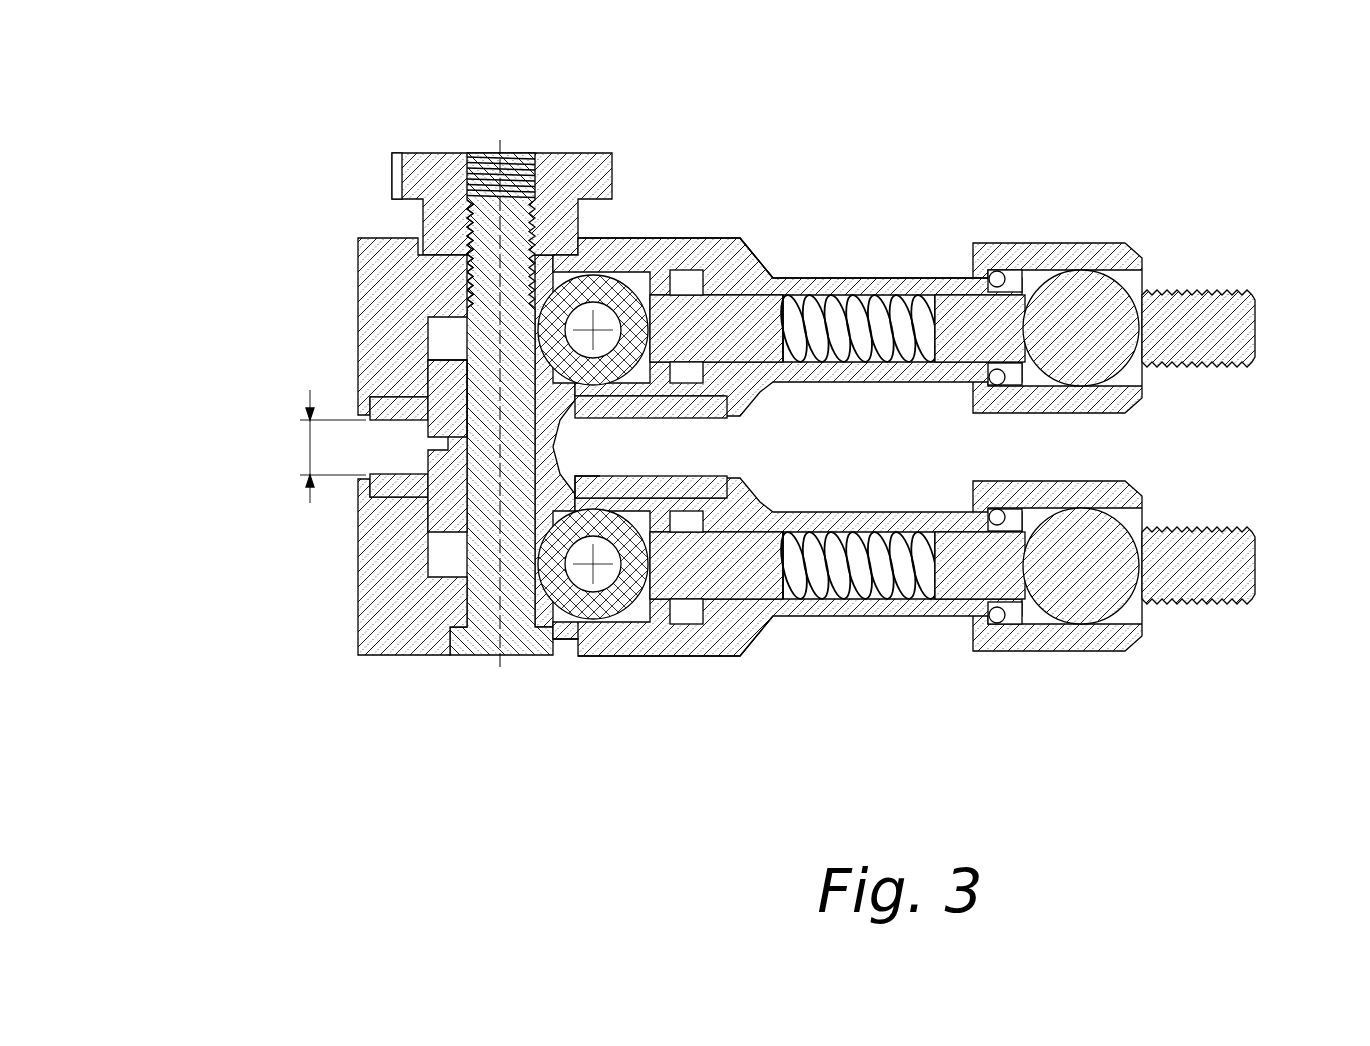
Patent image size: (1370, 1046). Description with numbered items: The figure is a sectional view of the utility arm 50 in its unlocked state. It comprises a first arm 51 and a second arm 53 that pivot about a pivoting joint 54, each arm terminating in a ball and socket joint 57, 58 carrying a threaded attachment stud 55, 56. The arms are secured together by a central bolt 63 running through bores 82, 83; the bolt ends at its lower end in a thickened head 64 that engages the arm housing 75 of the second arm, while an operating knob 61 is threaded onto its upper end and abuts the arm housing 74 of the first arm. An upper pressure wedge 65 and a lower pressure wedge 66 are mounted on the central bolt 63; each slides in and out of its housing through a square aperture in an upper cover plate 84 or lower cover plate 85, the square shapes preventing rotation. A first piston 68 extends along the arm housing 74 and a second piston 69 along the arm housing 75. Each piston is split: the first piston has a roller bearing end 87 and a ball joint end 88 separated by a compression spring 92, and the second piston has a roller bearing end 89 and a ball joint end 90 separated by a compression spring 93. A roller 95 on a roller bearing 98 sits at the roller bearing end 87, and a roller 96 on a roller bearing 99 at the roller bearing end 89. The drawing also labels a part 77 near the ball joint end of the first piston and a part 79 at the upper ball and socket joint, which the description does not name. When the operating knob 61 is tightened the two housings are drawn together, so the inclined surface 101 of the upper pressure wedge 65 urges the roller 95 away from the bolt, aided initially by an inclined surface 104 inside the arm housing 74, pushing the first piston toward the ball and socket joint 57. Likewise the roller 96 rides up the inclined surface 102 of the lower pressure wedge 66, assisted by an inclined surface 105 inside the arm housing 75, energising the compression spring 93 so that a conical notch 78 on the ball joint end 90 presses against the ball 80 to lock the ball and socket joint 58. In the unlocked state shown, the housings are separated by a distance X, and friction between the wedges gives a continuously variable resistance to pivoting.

The utility arm 50 is at (751, 450).
The first arm 51 is at (810, 277).
The second arm 53 is at (787, 643).
The pivoting joint 54 is at (457, 450).
The threaded attachment stud 55 is at (1208, 343).
The threaded attachment stud 56 is at (1227, 572).
The ball and socket joint 57 is at (1063, 260).
The ball and socket joint 58 is at (1063, 640).
The operating knob 61 is at (430, 165).
The central bolt 63 is at (314, 254).
The thickened head 64 is at (409, 427).
The upper pressure wedge 65 is at (435, 382).
The lower pressure wedge 66 is at (447, 488).
The first piston 68 is at (753, 307).
The second piston 69 is at (702, 623).
The arm housing 74 is at (787, 253).
The arm housing 75 is at (645, 645).
The upper piston rod 77 is at (1022, 320).
The conical notch 78 is at (1000, 612).
The upper ball joint 79 is at (1117, 308).
The ball 80 is at (1105, 570).
The bore 82 is at (465, 303).
The bore 83 is at (329, 527).
The upper cover plate 84 is at (390, 405).
The lower cover plate 85 is at (744, 466).
The roller bearing end 87 is at (688, 317).
The ball joint end 88 is at (980, 335).
The roller bearing end 89 is at (687, 578).
The ball joint end 90 is at (988, 548).
The compression spring 92 is at (898, 317).
The compression spring 93 is at (823, 570).
The roller 95 is at (587, 283).
The roller 96 is at (631, 696).
The roller bearing 98 is at (608, 220).
The roller bearing 99 is at (610, 573).
The inclined surface 101 is at (575, 400).
The inclined surface 102 is at (565, 503).
The inclined surface 104 is at (563, 270).
The inclined surface 105 is at (563, 617).